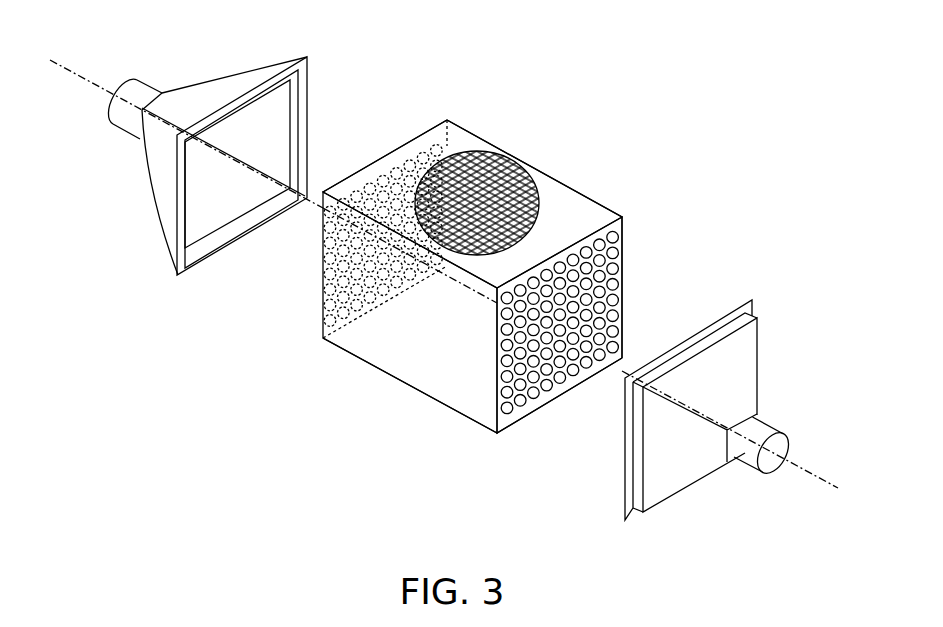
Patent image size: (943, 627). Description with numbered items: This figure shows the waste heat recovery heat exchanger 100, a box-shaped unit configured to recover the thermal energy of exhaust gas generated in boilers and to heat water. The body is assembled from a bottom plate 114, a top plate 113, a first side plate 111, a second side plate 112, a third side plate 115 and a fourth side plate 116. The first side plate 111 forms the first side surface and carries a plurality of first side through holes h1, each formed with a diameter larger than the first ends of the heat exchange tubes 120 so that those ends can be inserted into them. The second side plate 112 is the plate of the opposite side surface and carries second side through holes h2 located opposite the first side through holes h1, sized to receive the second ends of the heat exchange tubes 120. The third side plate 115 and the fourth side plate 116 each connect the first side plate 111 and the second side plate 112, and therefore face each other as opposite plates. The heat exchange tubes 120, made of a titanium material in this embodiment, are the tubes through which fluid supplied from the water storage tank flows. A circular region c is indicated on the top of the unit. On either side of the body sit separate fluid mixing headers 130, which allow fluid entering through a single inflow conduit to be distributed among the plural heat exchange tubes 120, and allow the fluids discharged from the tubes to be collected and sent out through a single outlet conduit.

The waste heat recovery heat exchanger 100 is at (445, 271).
The first side plate 111 is at (385, 223).
The second side plate 112 is at (588, 327).
The top plate 113 is at (472, 187).
The bottom plate 114 is at (418, 353).
The third side plate 115 is at (577, 237).
The fourth side plate 116 is at (377, 353).
The heat exchange tubes 120 is at (509, 182).
The circular opening c is at (512, 163).
The first side through holes h1 is at (345, 190).
The second side through holes h2 is at (622, 286).
The fluid mixing headers 130 is at (240, 73).